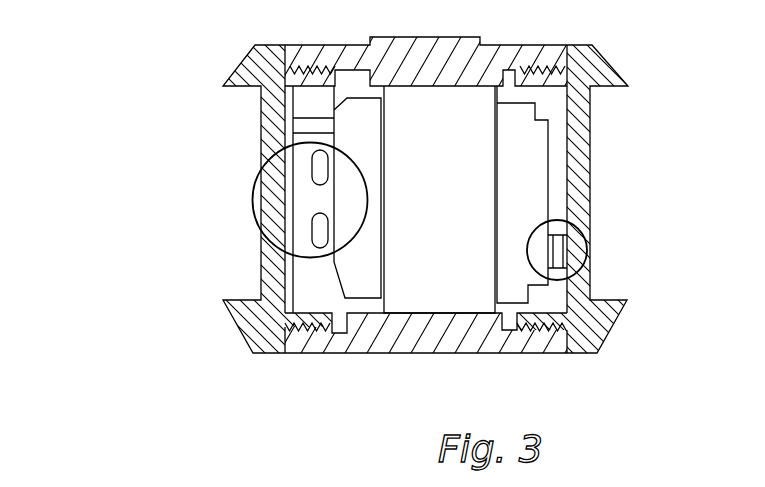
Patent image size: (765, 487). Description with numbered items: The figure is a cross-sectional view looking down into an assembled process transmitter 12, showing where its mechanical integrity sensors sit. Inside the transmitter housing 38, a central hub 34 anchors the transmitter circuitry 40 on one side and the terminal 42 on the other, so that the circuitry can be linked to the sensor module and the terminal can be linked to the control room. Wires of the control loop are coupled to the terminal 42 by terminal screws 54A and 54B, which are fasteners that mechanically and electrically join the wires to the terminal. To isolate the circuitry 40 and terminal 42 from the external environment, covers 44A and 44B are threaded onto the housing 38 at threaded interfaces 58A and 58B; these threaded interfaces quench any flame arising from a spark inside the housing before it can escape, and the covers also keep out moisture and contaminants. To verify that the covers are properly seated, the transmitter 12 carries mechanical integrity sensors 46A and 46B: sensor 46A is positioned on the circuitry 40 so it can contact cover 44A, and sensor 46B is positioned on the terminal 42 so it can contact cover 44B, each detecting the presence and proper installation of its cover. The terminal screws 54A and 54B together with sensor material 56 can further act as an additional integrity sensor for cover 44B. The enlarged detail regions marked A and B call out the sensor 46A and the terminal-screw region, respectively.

The process transmitter 12 is at (243, 365).
The hub 34 is at (448, 137).
The transmitter housing 38 is at (438, 72).
The transmitter circuitry 40 is at (536, 160).
The terminal 42 is at (375, 137).
The cover 44A is at (599, 55).
The cover 44B is at (247, 55).
The mechanical integrity sensor 46A is at (557, 238).
The mechanical integrity sensor 46B is at (317, 123).
The terminal screw 54A is at (322, 168).
The terminal screw 54B is at (322, 233).
The sensor material 56 is at (295, 130).
The threaded interface 58A is at (527, 347).
The threaded interface 58B is at (329, 346).
The detail A circle A is at (582, 267).
The detail B circle B is at (296, 257).